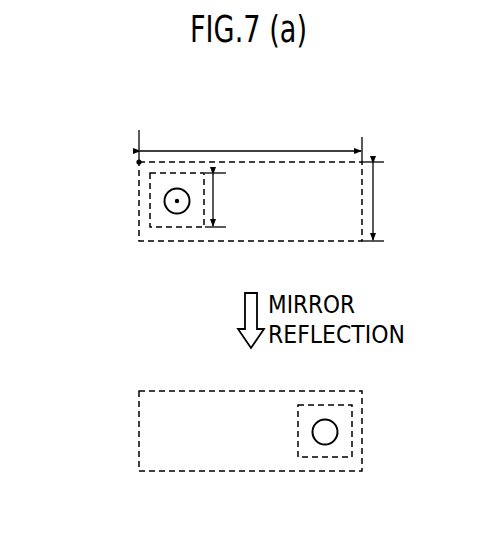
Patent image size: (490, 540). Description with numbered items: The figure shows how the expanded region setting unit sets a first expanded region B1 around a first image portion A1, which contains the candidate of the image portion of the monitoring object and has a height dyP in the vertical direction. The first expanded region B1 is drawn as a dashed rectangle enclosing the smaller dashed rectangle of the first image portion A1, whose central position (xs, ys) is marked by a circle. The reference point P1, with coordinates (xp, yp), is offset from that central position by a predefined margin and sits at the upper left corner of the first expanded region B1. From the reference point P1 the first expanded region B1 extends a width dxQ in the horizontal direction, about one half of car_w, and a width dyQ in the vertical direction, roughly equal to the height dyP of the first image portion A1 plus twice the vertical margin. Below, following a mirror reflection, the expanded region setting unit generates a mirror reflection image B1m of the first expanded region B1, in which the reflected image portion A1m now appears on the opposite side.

The reference point P1 is at (86, 160).
The first image portion A1 is at (150, 198).
The first expanded region B1 is at (330, 241).
The width in the horizontal direction of the first expanded region dxQ is at (250, 141).
The width in the vertical direction of the first image portion dyP is at (231, 200).
The width in the vertical direction of the first expanded region dyQ is at (389, 201).
The mirror reflection image of the first image portion A1m is at (353, 428).
The mirror reflection image of the first expanded region B1m is at (332, 471).